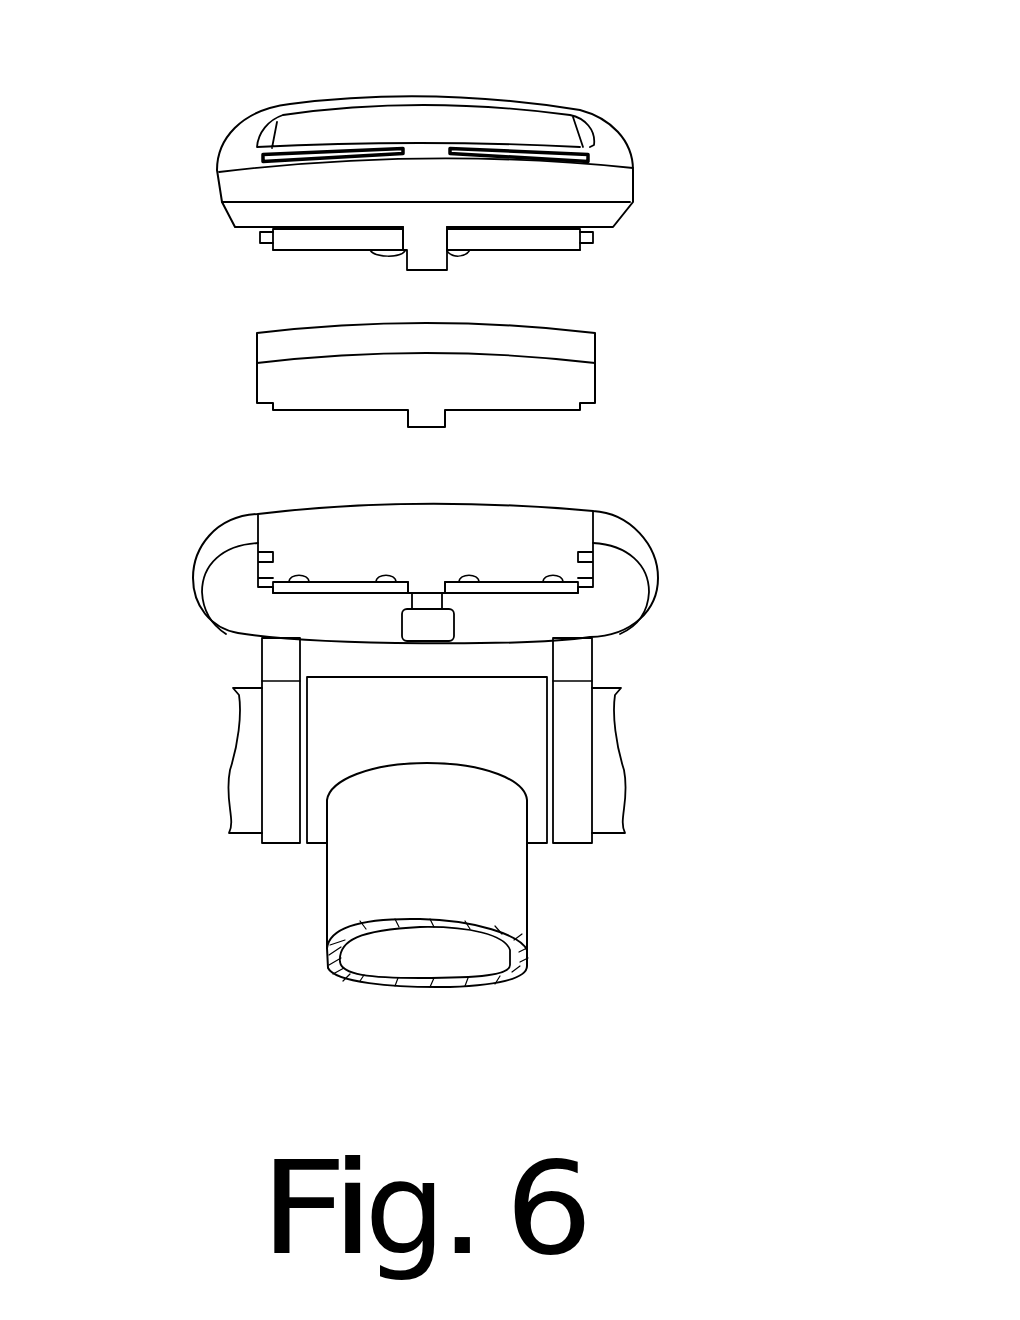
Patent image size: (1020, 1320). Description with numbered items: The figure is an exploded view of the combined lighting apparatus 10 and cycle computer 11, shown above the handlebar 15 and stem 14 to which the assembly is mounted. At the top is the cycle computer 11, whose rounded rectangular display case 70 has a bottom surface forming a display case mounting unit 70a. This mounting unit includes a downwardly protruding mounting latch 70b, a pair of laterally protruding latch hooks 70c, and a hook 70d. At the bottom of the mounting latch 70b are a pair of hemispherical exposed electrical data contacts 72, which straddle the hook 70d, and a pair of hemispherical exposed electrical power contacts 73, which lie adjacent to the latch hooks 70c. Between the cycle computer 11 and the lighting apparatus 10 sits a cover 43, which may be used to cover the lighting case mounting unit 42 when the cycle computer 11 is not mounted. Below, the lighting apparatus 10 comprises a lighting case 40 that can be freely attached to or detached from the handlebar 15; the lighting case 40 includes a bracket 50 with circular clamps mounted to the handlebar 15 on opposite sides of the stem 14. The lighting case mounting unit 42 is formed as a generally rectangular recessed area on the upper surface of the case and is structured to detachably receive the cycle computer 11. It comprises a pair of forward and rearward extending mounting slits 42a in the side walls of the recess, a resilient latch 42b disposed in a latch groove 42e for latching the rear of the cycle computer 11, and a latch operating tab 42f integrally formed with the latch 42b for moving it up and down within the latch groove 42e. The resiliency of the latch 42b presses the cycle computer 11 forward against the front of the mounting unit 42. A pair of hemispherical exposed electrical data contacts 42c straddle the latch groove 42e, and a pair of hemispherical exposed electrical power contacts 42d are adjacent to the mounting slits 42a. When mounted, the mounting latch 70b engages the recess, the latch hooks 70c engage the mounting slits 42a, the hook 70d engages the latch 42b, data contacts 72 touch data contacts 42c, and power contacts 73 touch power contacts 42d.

The cycle computer 11 is at (522, 92).
The display case 70 is at (642, 166).
The display case mounting unit 70a is at (437, 271).
The mounting latch 70b is at (542, 245).
The latch hooks 70c is at (258, 234).
The hook 70d is at (418, 263).
The electrical data contacts 72 is at (380, 252).
The electrical power contacts 73 is at (298, 252).
The cover 43 is at (583, 318).
The lighting apparatus 10 is at (640, 507).
The lighting case 40 is at (664, 549).
The lighting case mounting unit 42 is at (519, 531).
The mounting slits 42a is at (263, 587).
The resilient latch 42b is at (430, 585).
The electrical data contacts 42c is at (383, 578).
The electrical power contacts 42d is at (297, 575).
The latch groove 42e is at (433, 597).
The latch operating tab 42f is at (410, 630).
The bracket 50 is at (573, 752).
The handlebar 15 is at (607, 817).
The stem 14 is at (498, 917).